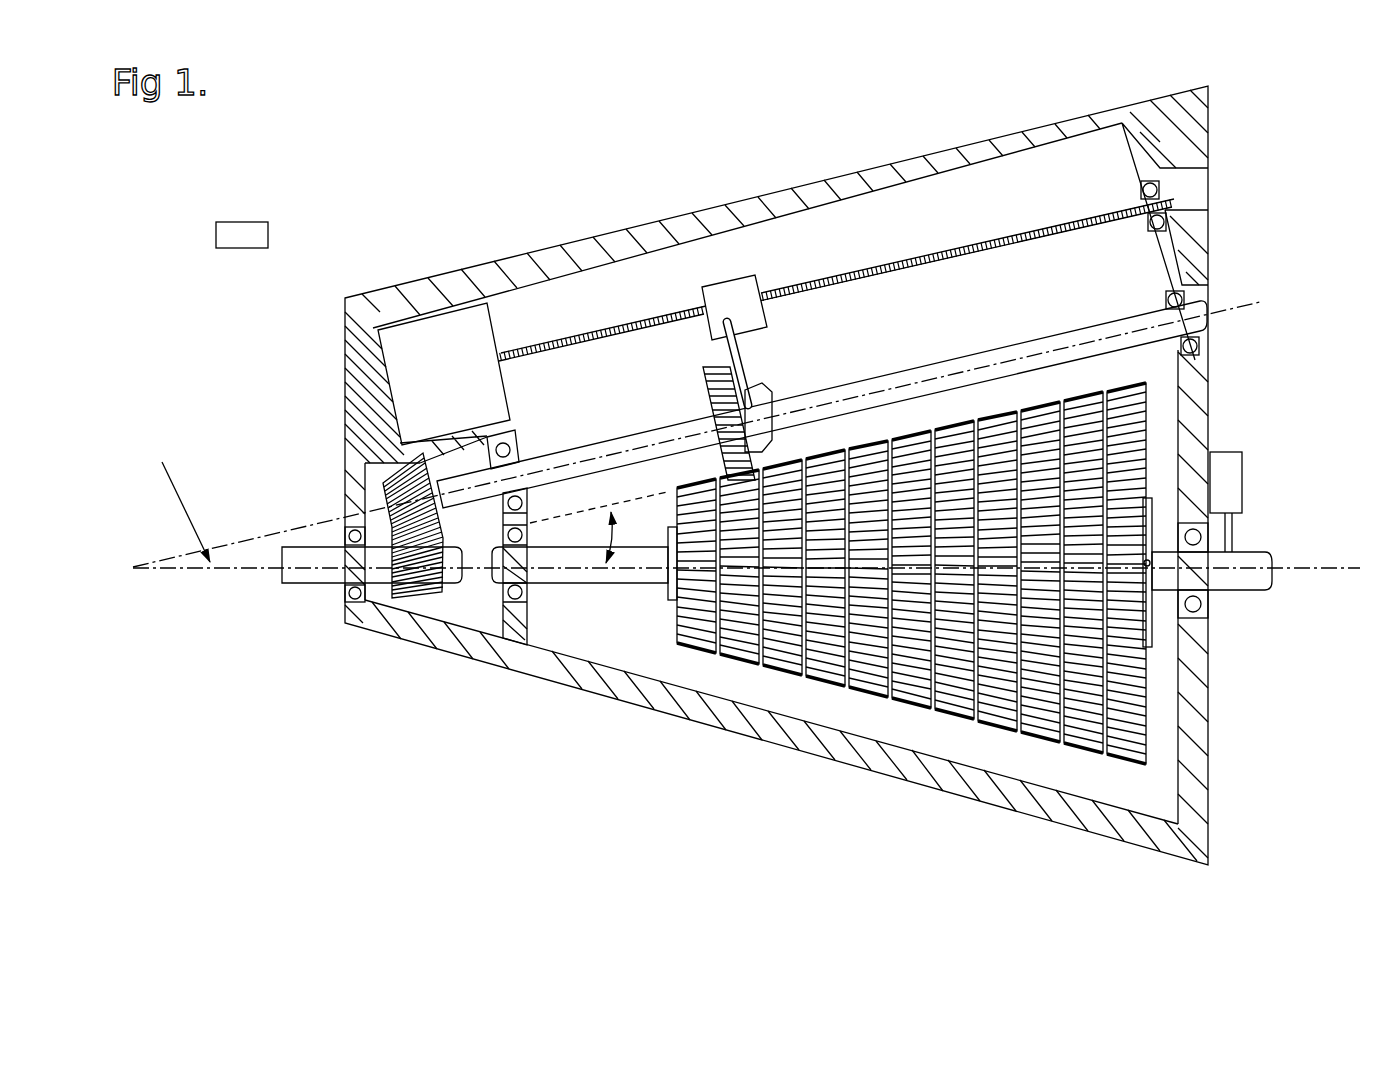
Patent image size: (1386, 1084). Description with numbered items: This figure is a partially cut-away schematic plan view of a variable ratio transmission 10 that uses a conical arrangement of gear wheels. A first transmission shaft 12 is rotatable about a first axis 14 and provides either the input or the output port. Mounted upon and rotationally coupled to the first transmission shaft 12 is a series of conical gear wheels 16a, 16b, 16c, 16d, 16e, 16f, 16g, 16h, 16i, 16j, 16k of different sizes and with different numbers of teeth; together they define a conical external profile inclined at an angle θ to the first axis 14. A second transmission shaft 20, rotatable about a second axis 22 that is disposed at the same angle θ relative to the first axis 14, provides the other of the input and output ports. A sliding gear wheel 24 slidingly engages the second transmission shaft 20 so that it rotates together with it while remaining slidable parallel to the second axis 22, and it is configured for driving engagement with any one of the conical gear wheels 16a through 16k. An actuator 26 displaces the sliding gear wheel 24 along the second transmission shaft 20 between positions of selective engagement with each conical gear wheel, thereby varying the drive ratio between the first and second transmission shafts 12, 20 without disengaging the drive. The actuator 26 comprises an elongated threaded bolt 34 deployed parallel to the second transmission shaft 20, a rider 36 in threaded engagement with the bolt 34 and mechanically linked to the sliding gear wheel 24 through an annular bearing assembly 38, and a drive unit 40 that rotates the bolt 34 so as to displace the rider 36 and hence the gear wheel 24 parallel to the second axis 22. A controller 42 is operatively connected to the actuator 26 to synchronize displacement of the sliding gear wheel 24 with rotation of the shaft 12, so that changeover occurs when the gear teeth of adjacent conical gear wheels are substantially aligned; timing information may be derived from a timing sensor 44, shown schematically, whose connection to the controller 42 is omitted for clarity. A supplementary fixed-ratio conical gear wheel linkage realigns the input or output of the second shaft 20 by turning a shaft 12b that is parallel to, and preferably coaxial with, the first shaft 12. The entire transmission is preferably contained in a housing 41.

The variable ratio transmission 10 is at (243, 660).
The first transmission shaft 12 is at (1268, 550).
The shaft 12b is at (302, 553).
The first axis 14 is at (1325, 575).
The conical gear wheel 16a is at (1118, 759).
The conical gear wheel 16b is at (1077, 748).
The conical gear wheel 16c is at (1033, 737).
The conical gear wheel 16d is at (988, 725).
The conical gear wheel 16e is at (950, 715).
The conical gear wheel 16f is at (907, 704).
The conical gear wheel 16g is at (865, 693).
The conical gear wheel 16h is at (823, 682).
The conical gear wheel 16i is at (788, 673).
The conical gear wheel 16j is at (740, 661).
The conical gear wheel 16k is at (697, 650).
The second transmission shaft 20 is at (1060, 333).
The second axis 22 is at (1262, 303).
The sliding gear wheel 24 is at (707, 407).
The actuator 26 is at (376, 390).
The elongated threaded bolt 34 is at (918, 262).
The rider 36 is at (732, 287).
The annular bearing assembly 38 is at (763, 380).
The drive unit 40 is at (443, 383).
The housing 41 is at (448, 636).
The controller 42 is at (376, 334).
The timing sensor 44 is at (1235, 450).